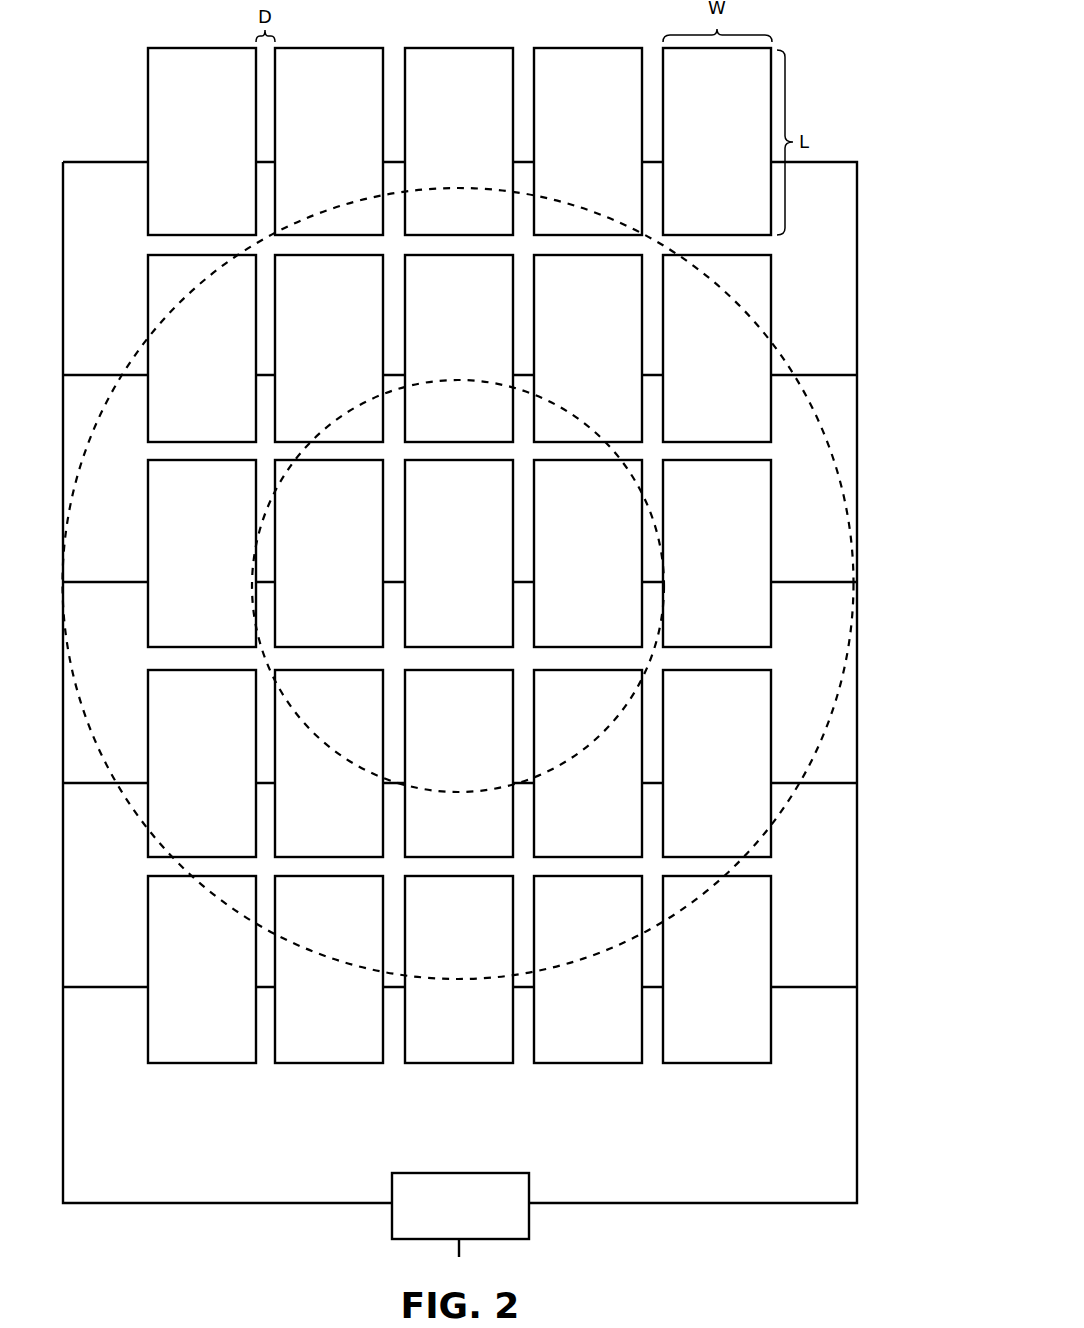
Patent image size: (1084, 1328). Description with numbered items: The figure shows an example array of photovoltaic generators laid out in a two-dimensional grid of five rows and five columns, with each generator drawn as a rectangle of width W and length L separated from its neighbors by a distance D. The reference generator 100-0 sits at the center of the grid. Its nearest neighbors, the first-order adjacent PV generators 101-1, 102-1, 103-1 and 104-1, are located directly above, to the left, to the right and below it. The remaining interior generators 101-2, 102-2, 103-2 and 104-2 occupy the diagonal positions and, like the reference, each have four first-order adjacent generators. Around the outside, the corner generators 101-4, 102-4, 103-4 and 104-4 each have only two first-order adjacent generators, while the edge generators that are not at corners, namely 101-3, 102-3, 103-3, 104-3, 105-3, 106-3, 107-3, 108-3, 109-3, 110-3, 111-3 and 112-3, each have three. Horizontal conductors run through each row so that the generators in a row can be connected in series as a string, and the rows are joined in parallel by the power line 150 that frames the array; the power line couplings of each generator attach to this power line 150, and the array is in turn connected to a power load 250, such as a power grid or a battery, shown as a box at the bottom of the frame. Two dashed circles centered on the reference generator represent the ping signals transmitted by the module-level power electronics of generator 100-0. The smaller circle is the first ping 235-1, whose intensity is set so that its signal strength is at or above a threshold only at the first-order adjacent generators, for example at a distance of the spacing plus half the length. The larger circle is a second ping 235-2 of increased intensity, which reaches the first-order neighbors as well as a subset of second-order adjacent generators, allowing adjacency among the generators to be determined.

The power line 150 is at (838, 162).
The power load 250 is at (530, 1181).
The first ping signal 235-1 is at (613, 718).
The second ping signal 235-2 is at (588, 960).
The PV generator 100-0 is at (459, 553).
The PV generator 101-1 is at (459, 348).
The PV generator 101-2 is at (329, 348).
The PV generator 101-3 is at (329, 141).
The PV generator 101-4 is at (202, 141).
The PV generator 102-1 is at (329, 553).
The PV generator 102-2 is at (588, 348).
The PV generator 102-3 is at (459, 141).
The PV generator 102-4 is at (717, 141).
The PV generator 103-1 is at (588, 553).
The PV generator 103-2 is at (329, 763).
The PV generator 103-3 is at (588, 141).
The PV generator 103-4 is at (202, 969).
The PV generator 104-1 is at (459, 763).
The PV generator 104-2 is at (588, 763).
The PV generator 104-3 is at (202, 348).
The PV generator 104-4 is at (717, 969).
The PV generator 105-3 is at (717, 348).
The PV generator 106-3 is at (202, 553).
The PV generator 107-3 is at (717, 553).
The PV generator 108-3 is at (202, 763).
The PV generator 109-3 is at (717, 763).
The PV generator 110-3 is at (329, 969).
The PV generator 111-3 is at (459, 969).
The PV generator 112-3 is at (588, 969).